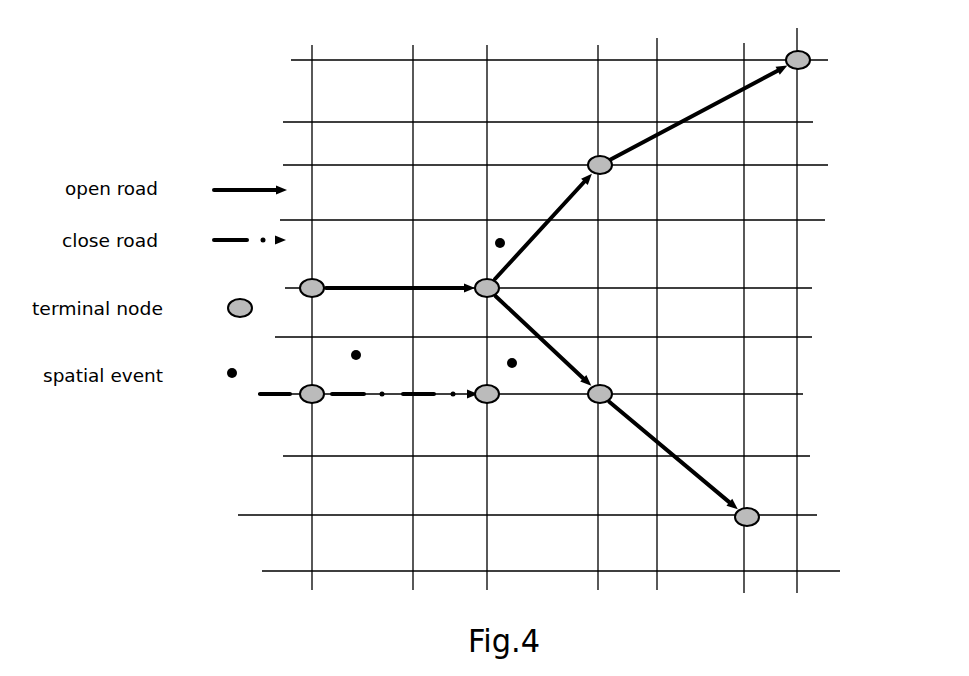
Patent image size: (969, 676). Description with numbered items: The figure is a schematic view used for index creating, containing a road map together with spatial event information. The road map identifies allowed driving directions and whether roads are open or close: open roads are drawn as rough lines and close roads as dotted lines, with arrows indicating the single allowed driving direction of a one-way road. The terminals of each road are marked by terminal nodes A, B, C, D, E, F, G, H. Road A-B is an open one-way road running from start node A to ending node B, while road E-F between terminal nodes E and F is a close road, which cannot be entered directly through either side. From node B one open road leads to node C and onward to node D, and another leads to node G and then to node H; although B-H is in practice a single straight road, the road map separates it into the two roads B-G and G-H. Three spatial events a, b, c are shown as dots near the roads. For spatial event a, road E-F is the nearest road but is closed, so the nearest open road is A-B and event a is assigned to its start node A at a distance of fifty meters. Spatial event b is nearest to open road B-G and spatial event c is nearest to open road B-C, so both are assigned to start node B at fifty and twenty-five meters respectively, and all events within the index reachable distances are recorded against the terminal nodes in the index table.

The terminal node A is at (322, 277).
The terminal node B is at (481, 303).
The terminal node C is at (590, 156).
The terminal node D is at (803, 74).
The terminal node E is at (320, 410).
The terminal node F is at (494, 411).
The terminal node G is at (586, 406).
The terminal node H is at (735, 531).
The spatial event a is at (324, 303).
The spatial event b is at (495, 306).
The spatial event c is at (492, 270).